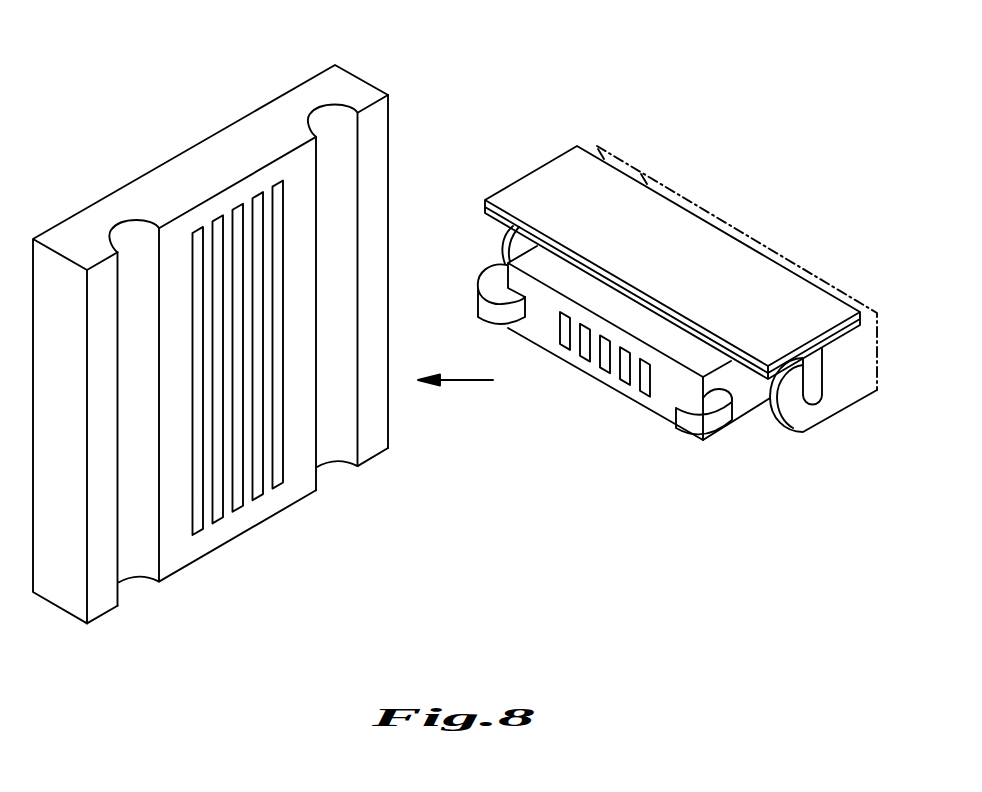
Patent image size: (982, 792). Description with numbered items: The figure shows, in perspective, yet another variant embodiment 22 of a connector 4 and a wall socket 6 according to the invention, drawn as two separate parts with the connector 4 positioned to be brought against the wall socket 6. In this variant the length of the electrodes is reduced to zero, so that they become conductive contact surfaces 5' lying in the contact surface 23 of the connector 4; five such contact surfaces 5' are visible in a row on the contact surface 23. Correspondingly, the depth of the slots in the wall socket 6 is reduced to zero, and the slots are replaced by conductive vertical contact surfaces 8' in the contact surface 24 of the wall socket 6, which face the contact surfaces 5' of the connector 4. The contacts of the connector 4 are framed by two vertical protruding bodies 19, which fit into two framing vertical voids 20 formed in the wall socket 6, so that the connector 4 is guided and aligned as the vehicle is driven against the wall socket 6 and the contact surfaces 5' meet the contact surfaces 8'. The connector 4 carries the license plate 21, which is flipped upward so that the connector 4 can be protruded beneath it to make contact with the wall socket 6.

The wall socket 6 is at (338, 86).
The contact surface of the wall socket 24 is at (298, 247).
The framing vertical voids 20 is at (142, 584).
The conductive vertical contact surfaces 8' is at (250, 400).
The variant embodiment 22 is at (557, 50).
The license plate 21 is at (742, 283).
The connector 4 is at (603, 297).
The conductive contact surfaces 5' is at (575, 381).
The vertical protruding bodies 19 is at (476, 306).
The contact surface of the connector 23 is at (660, 405).